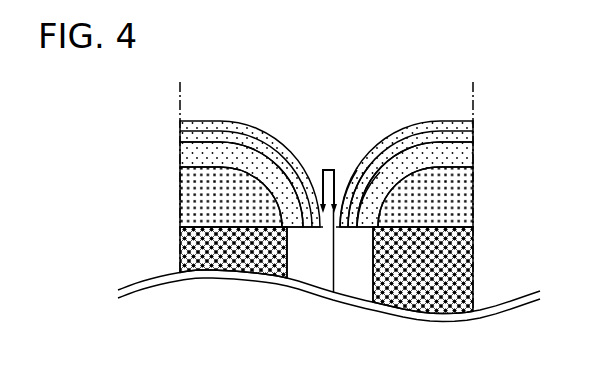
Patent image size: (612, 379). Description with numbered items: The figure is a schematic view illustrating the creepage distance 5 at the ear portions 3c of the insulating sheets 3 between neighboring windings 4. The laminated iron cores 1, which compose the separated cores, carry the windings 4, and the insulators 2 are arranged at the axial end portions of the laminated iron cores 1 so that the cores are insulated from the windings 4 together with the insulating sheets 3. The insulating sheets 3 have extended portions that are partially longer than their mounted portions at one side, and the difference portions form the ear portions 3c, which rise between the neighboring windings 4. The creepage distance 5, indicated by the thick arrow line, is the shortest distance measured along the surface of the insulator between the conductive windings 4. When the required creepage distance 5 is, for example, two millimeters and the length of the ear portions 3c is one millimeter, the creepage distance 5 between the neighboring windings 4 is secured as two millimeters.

The laminated iron core 1 is at (235, 248).
The insulator 2 is at (233, 205).
The insulating sheet 3 is at (180, 223).
The ear portion 3c is at (337, 168).
The winding 4 is at (245, 157).
The creepage distance 5 is at (327, 170).